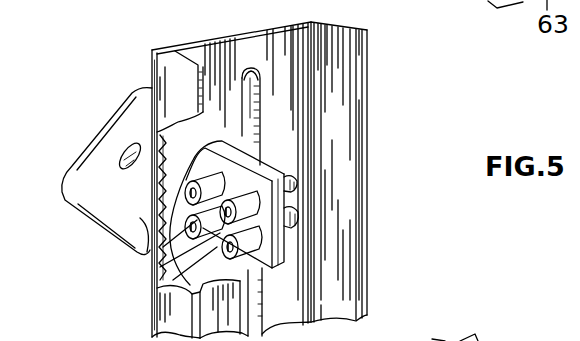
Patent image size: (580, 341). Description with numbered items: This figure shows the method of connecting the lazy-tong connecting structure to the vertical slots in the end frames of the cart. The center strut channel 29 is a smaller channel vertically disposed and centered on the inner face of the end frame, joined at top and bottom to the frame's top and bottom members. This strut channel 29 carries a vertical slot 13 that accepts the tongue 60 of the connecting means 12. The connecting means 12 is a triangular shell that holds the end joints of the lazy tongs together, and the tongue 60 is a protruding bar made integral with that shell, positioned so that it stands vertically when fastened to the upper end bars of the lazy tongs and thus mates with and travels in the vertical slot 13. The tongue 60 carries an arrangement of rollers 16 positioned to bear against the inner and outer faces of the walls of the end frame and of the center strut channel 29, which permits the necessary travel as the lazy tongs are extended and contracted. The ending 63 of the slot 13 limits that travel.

The center strut channel 29 is at (162, 74).
The connecting means 12 is at (107, 148).
The slot ending 63 is at (252, 70).
The vertical slot 13 is at (258, 115).
The tongue 60 is at (268, 170).
The rollers 16 is at (218, 246).